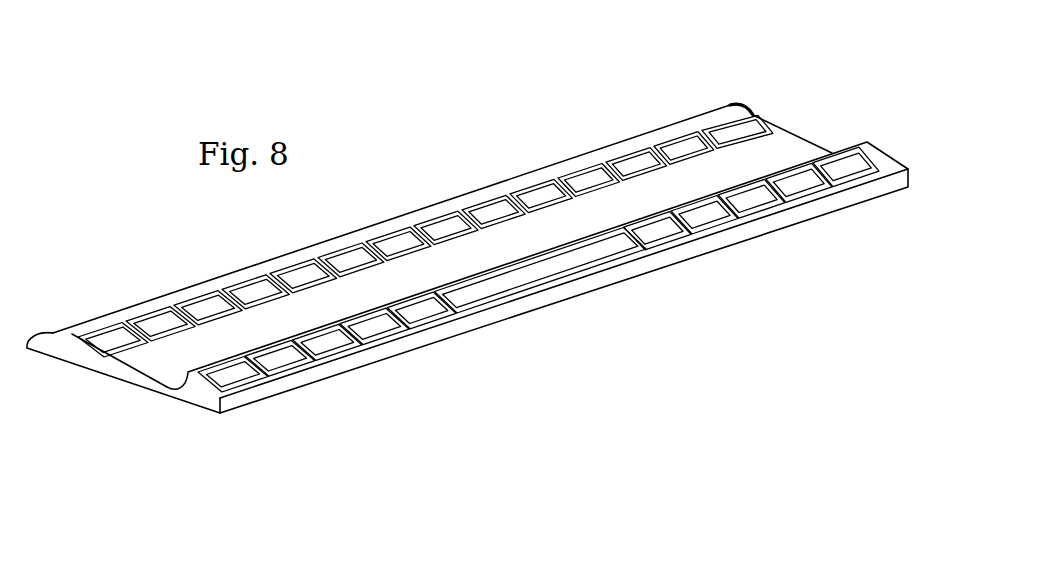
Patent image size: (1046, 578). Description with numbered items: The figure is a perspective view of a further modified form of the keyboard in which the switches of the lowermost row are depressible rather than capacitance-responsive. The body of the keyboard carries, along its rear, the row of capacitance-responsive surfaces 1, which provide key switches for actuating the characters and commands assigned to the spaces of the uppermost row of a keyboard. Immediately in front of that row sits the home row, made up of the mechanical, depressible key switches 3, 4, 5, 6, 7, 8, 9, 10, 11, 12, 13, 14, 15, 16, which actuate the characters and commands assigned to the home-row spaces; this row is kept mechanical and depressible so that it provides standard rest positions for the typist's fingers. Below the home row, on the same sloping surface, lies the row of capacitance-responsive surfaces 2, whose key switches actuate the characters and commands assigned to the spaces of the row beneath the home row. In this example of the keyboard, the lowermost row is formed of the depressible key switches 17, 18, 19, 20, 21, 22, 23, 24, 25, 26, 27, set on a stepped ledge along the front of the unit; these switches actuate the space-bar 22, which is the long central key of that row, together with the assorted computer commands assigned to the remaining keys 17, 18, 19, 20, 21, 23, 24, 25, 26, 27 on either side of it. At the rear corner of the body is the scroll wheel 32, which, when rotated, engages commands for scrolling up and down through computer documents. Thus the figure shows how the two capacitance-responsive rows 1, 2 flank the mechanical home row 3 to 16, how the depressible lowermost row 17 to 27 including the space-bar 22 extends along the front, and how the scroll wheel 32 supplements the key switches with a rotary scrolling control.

The row of capacitance-responsive surfaces 1 is at (74, 331).
The row of capacitance-responsive surfaces 2 is at (154, 368).
The mechanical depressible key switch 3 is at (107, 334).
The mechanical depressible key switch 4 is at (158, 318).
The mechanical depressible key switch 5 is at (207, 302).
The mechanical depressible key switch 6 is at (254, 286).
The mechanical depressible key switch 7 is at (302, 270).
The mechanical depressible key switch 8 is at (349, 255).
The mechanical depressible key switch 9 is at (398, 239).
The mechanical depressible key switch 10 is at (447, 223).
The mechanical depressible key switch 11 is at (494, 207).
The mechanical depressible key switch 12 is at (542, 192).
The mechanical depressible key switch 13 is at (591, 175).
The mechanical depressible key switch 14 is at (637, 162).
The mechanical depressible key switch 15 is at (685, 146).
The mechanical depressible key switch 16 is at (722, 129).
The depressible key switch 17 is at (240, 380).
The depressible key switch 18 is at (287, 364).
The depressible key switch 19 is at (334, 348).
The depressible key switch 20 is at (381, 332).
The depressible key switch 21 is at (430, 317).
The space-bar 22 is at (553, 273).
The depressible key switch 23 is at (670, 231).
The depressible key switch 24 is at (717, 217).
The depressible key switch 25 is at (767, 202).
The depressible key switch 26 is at (815, 187).
The depressible key switch 27 is at (865, 172).
The scroll wheel 32 is at (745, 106).